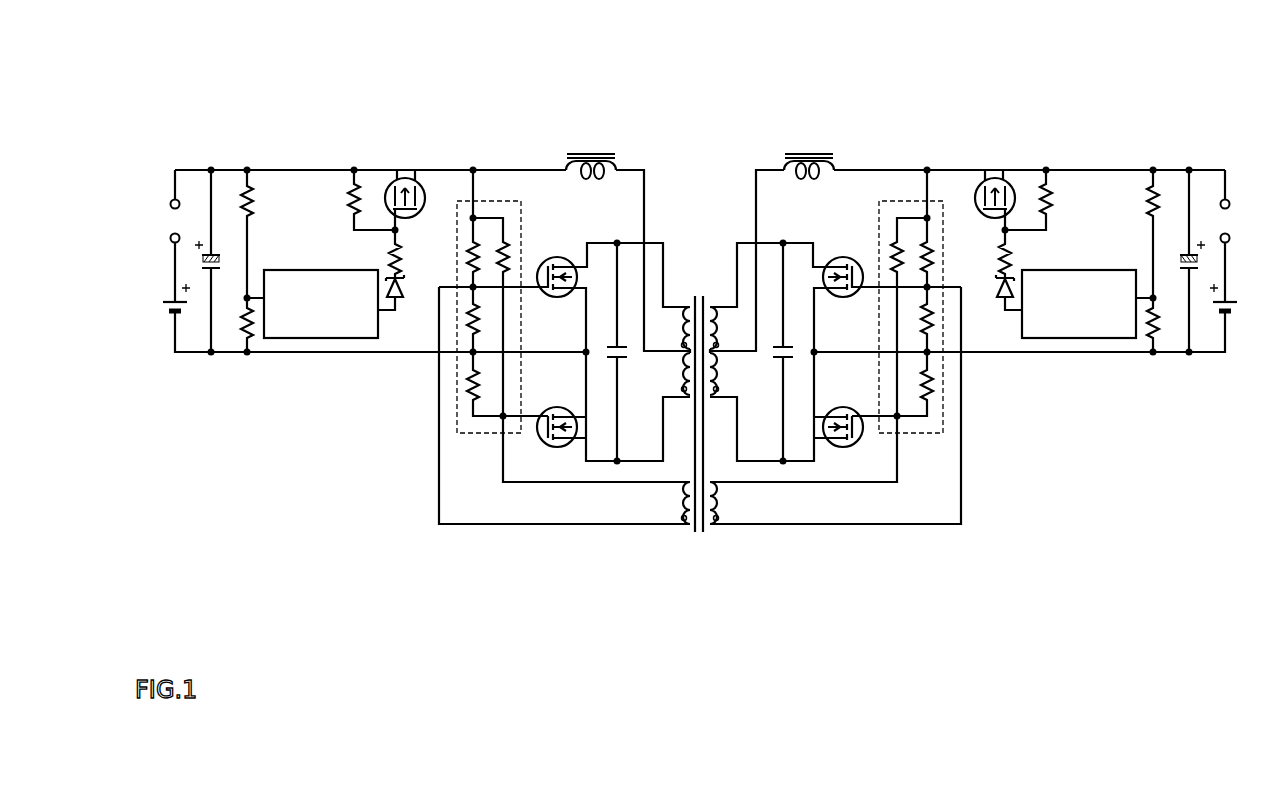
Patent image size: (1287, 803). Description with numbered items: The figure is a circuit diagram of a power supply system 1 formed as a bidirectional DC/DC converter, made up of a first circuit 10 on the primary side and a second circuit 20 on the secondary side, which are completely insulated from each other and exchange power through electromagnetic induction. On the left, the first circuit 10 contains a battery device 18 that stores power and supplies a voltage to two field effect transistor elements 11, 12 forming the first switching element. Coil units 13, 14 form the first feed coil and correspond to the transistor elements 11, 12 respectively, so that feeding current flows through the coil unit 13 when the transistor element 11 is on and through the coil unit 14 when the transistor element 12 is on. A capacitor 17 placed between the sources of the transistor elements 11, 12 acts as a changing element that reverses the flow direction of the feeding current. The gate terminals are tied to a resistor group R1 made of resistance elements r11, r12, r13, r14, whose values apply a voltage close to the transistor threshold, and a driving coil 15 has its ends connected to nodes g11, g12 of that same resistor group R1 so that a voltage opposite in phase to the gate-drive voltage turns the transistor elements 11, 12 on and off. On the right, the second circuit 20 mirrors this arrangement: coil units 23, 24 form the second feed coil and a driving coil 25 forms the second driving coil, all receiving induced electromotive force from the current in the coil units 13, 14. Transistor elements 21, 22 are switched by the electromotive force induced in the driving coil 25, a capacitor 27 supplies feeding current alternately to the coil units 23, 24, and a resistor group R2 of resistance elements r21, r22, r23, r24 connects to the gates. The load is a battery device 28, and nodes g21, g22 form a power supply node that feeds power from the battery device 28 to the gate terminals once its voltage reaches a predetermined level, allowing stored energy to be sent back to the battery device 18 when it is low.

The power supply system 1 is at (983, 61).
The first circuit 10 is at (307, 143).
The second circuit 20 is at (989, 338).
The transistor element 11 is at (553, 258).
The transistor element 12 is at (556, 406).
The coil unit 13 is at (688, 304).
The coil unit 14 is at (687, 400).
The driving coil 15 is at (687, 526).
The capacitor 17 is at (615, 345).
The battery device 18 is at (170, 322).
The transistor element 21 is at (840, 246).
The transistor element 22 is at (839, 402).
The coil unit 23 is at (723, 293).
The coil unit 24 is at (723, 411).
The driving coil 25 is at (721, 538).
The capacitor 27 is at (793, 317).
The battery device 28 is at (1240, 335).
The resistor group R1 is at (483, 436).
The resistor group R2 is at (911, 354).
The resistance element r11 is at (470, 250).
The resistance element r12 is at (472, 320).
The resistance element r13 is at (472, 386).
The resistance element r14 is at (505, 250).
The resistance element r21 is at (942, 196).
The resistance element r22 is at (961, 345).
The resistance element r23 is at (961, 405).
The resistance element r24 is at (882, 196).
The node g11 is at (472, 289).
The node g12 is at (505, 418).
The node g21 is at (965, 312).
The node g22 is at (879, 464).